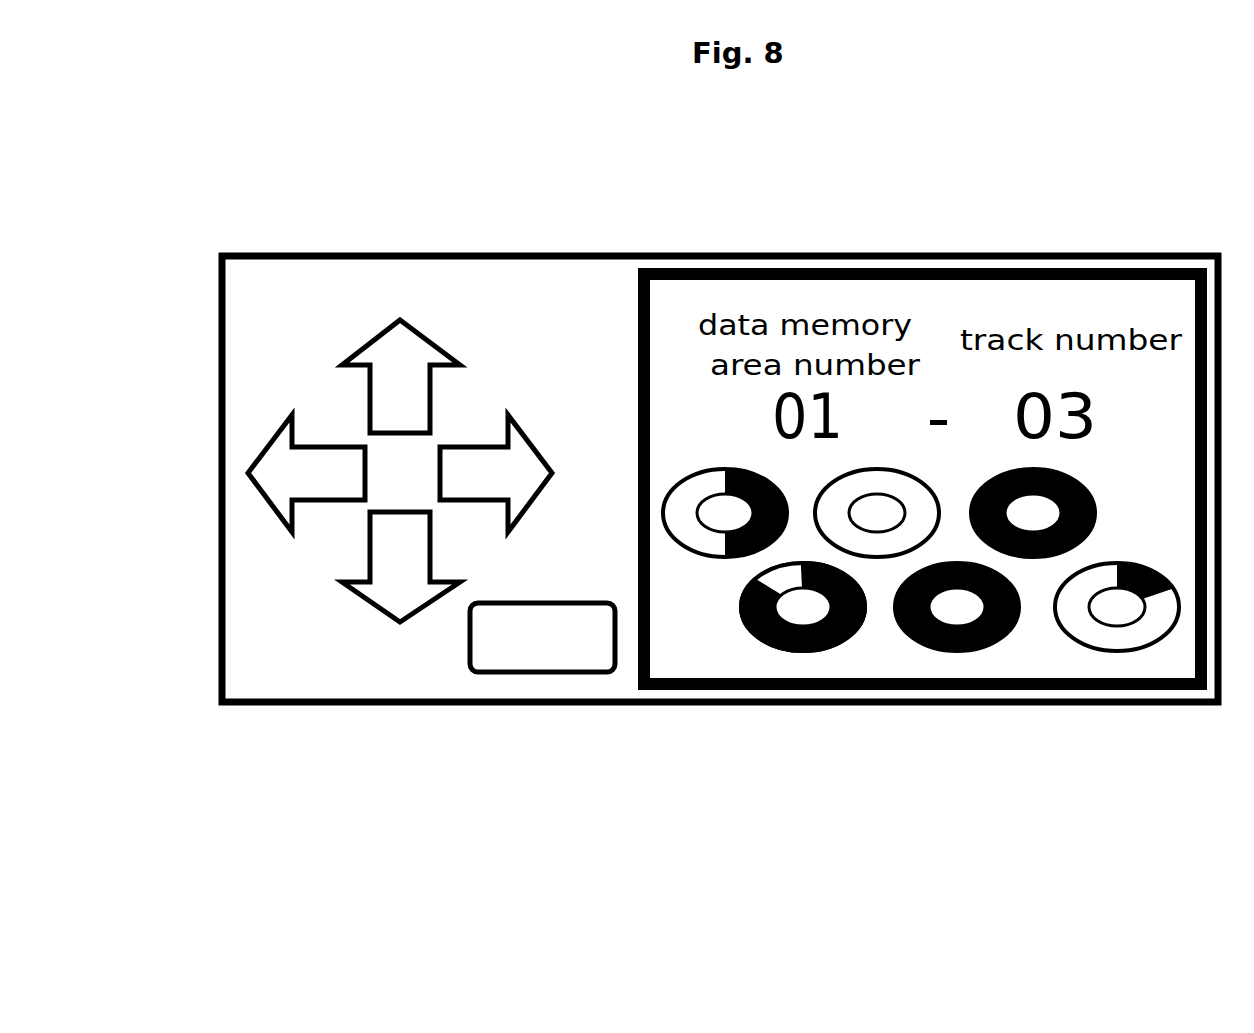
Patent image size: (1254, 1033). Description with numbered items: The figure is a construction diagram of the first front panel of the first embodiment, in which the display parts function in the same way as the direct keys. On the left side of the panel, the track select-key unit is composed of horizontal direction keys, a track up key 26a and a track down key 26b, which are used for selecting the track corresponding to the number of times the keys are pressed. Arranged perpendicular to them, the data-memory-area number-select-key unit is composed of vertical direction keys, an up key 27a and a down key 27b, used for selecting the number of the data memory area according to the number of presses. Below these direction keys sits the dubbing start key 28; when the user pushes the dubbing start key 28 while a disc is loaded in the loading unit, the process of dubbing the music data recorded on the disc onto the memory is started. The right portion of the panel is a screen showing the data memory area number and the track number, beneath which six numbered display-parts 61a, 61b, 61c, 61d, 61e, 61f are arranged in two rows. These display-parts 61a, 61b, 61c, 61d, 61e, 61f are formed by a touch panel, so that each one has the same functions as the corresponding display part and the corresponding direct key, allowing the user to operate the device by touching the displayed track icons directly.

The track up key 26a is at (258, 463).
The track down key 26b is at (538, 453).
The up key 27a is at (388, 338).
The down key 27b is at (370, 604).
The dubbing start key 28 is at (498, 670).
The display-part 61a is at (725, 557).
The display-part 61b is at (803, 651).
The display-part 61c is at (877, 557).
The display-part 61d is at (957, 651).
The display-part 61e is at (1033, 557).
The display-part 61f is at (1117, 651).